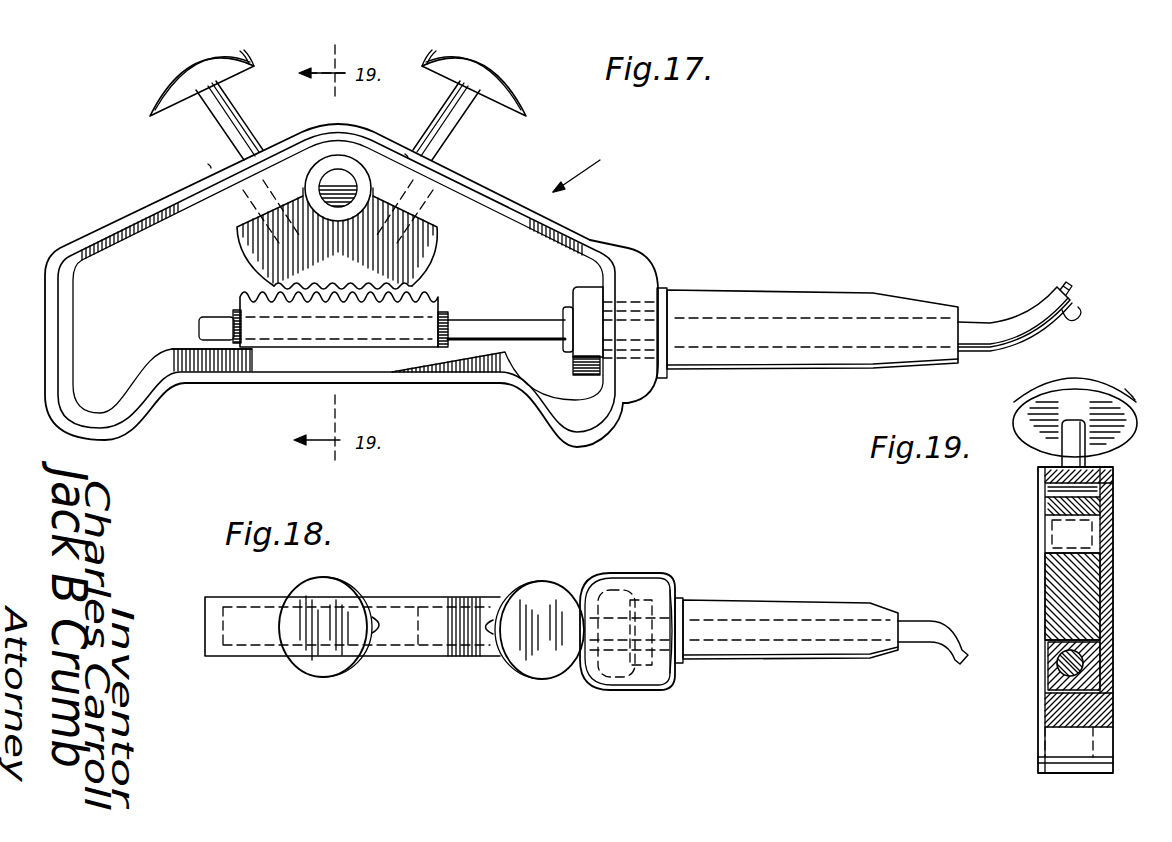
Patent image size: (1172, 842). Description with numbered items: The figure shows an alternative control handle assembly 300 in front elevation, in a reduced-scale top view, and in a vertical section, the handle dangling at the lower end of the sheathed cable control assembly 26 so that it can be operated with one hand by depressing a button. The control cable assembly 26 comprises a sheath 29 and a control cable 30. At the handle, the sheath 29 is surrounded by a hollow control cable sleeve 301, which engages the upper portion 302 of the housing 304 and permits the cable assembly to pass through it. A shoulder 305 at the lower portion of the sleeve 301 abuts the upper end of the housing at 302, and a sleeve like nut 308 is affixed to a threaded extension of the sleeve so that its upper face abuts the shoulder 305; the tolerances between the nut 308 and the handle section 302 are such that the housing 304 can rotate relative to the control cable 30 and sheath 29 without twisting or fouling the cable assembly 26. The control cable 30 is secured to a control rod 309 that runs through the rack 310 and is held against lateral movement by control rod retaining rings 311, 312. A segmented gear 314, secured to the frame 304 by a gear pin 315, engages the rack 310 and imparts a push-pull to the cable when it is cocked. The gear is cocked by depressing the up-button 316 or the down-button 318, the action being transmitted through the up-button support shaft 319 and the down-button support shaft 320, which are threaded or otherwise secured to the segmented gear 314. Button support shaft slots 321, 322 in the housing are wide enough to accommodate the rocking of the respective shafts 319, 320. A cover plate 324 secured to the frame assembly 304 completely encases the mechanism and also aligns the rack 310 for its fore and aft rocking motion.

In FIG. 17, the control handle assembly 300 is at (587, 165).
In FIG. 17, the control cable sleeve 301 is at (827, 302).
In FIG. 18, the control cable sleeve 301 is at (807, 647).
In FIG. 17, the upper portion of the housing 302 is at (633, 385).
In FIG. 18, the upper portion of the housing 302 is at (663, 667).
In FIG. 17, the housing 304 is at (585, 230).
In FIG. 18, the housing 304 is at (583, 590).
In FIG. 19, the housing 304 is at (1105, 640).
In FIG. 17, the shoulder 305 is at (670, 368).
In FIG. 18, the shoulder 305 is at (677, 603).
In FIG. 17, the sleeve like nut 308 is at (593, 375).
In FIG. 18, the sleeve like nut 308 is at (625, 665).
In FIG. 17, the control rod 309 is at (503, 330).
In FIG. 19, the control rod 309 is at (1058, 670).
In FIG. 17, the rack 310 is at (423, 308).
In FIG. 19, the rack 310 is at (1047, 650).
In FIG. 17, the control rod retaining ring 311 is at (443, 349).
In FIG. 17, the control rod retaining ring 312 is at (240, 349).
In FIG. 17, the segmented gear 314 is at (273, 276).
In FIG. 19, the segmented gear 314 is at (1087, 590).
In FIG. 17, the gear pin 315 is at (345, 193).
In FIG. 17, the up-button 316 is at (517, 92).
In FIG. 18, the up-button 316 is at (300, 600).
In FIG. 17, the down-button 318 is at (177, 85).
In FIG. 18, the down-button 318 is at (520, 607).
In FIG. 19, the down-button 318 is at (1103, 393).
In FIG. 17, the up-button support shaft 319 is at (450, 152).
In FIG. 17, the down-button support shaft 320 is at (230, 147).
In FIG. 19, the down-button support shaft 320 is at (1090, 460).
In FIG. 17, the button support shaft slot 321 is at (407, 153).
In FIG. 18, the button support shaft slot 321 is at (483, 634).
In FIG. 17, the button support shaft slot 322 is at (210, 168).
In FIG. 18, the button support shaft slot 322 is at (380, 613).
In FIG. 19, the cover plate 324 is at (1037, 567).
In FIG. 17, the sheath 29 is at (993, 325).
In FIG. 18, the sheath 29 is at (925, 628).
In FIG. 17, the control cable 30 is at (1068, 293).
In FIG. 17, the sheathed cable control assembly 26 is at (1080, 317).